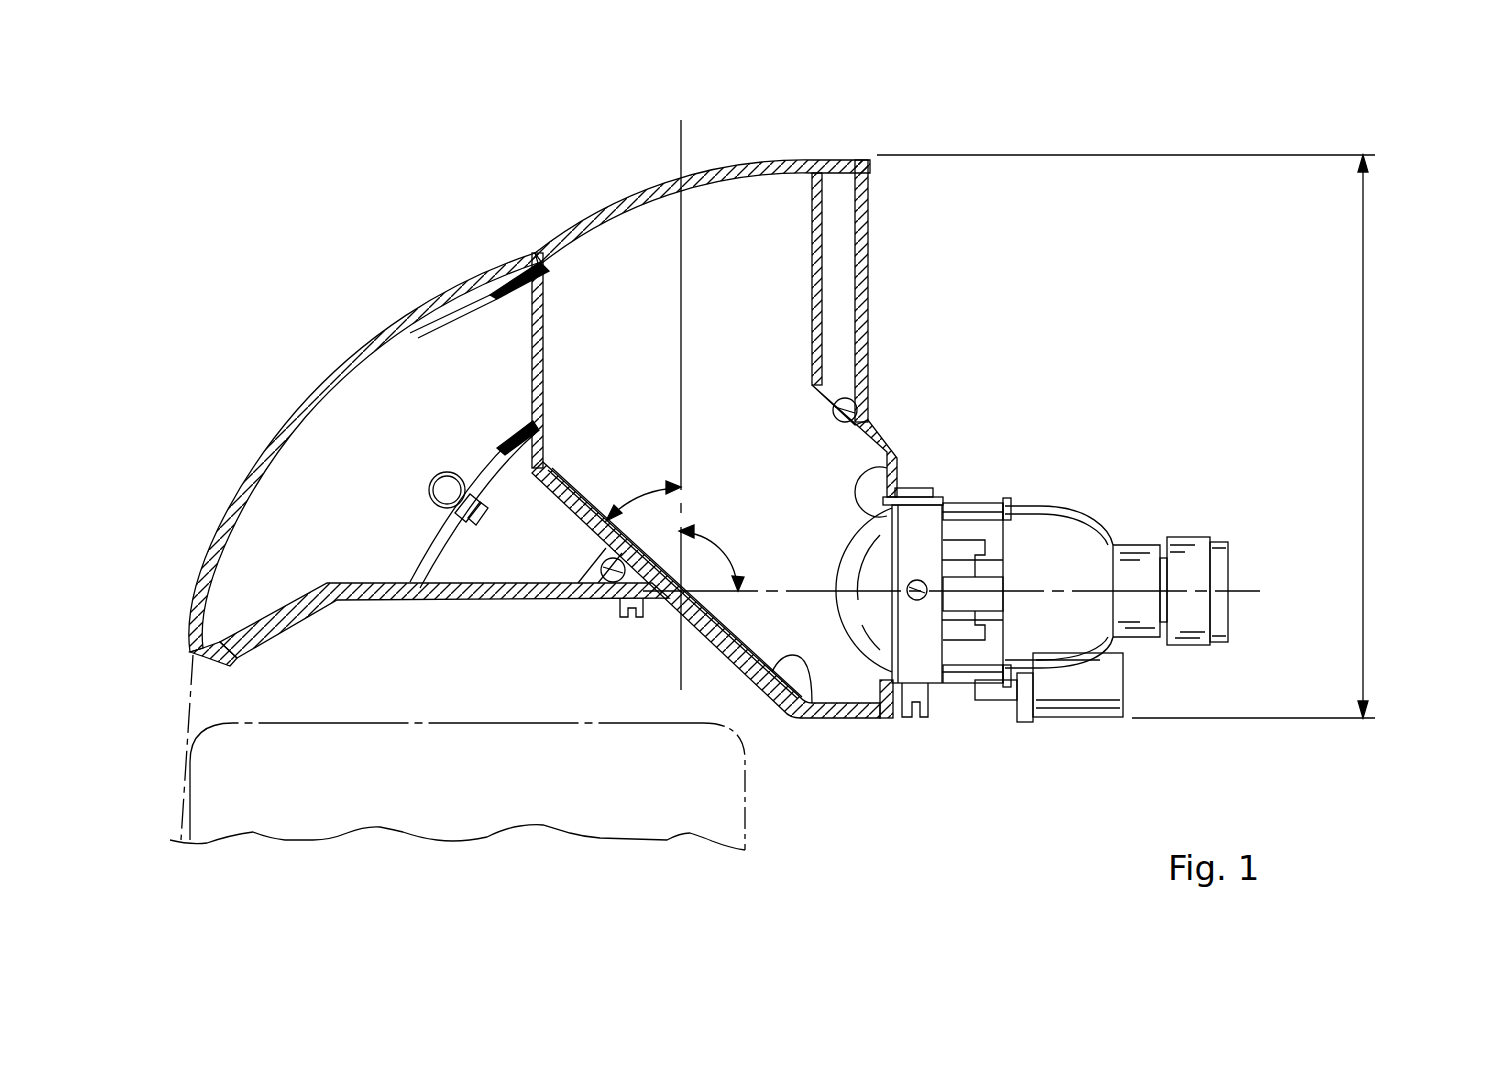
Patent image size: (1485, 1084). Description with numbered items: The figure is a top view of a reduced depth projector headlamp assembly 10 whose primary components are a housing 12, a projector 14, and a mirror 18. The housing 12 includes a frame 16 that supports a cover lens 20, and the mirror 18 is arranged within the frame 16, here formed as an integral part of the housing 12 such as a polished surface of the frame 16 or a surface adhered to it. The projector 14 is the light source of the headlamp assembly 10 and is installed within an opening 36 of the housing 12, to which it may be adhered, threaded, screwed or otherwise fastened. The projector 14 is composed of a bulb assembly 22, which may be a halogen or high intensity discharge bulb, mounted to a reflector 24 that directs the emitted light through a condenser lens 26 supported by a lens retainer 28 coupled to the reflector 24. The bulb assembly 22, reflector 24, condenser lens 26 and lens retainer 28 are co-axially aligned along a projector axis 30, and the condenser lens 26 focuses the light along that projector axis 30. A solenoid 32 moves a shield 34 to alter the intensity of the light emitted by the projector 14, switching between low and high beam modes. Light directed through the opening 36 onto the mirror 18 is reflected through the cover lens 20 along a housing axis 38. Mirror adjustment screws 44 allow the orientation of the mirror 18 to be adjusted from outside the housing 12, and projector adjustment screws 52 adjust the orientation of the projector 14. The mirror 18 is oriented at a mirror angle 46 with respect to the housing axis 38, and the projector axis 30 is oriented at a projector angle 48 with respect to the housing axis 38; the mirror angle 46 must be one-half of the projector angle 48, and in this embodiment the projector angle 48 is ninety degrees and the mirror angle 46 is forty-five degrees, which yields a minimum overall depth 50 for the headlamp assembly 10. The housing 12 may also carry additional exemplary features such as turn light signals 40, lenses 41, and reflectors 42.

The headlamp assembly 10 is at (253, 155).
The housing 12 is at (405, 608).
The projector 14 is at (1090, 498).
The frame 16 is at (870, 262).
The mirror 18 is at (813, 705).
The cover lens 20 is at (657, 188).
The bulb assembly 22 is at (1190, 553).
The reflector 24 is at (1033, 550).
The condenser lens 26 is at (846, 615).
The lens retainer 28 is at (915, 520).
The projector axis 30 is at (1243, 590).
The solenoid 32 is at (1075, 688).
The shield 34 is at (1003, 688).
The opening 36 is at (875, 452).
The housing axis 38 is at (683, 150).
The turn light signals 40 is at (447, 473).
The lenses 41 is at (292, 410).
The reflectors 42 is at (200, 577).
The mirror adjustment screws 44 is at (855, 405).
The mirror angle 46 is at (640, 490).
The projector angle 48 is at (722, 543).
The overall depth 50 is at (1370, 318).
The projector adjustment screws 52 is at (925, 583).